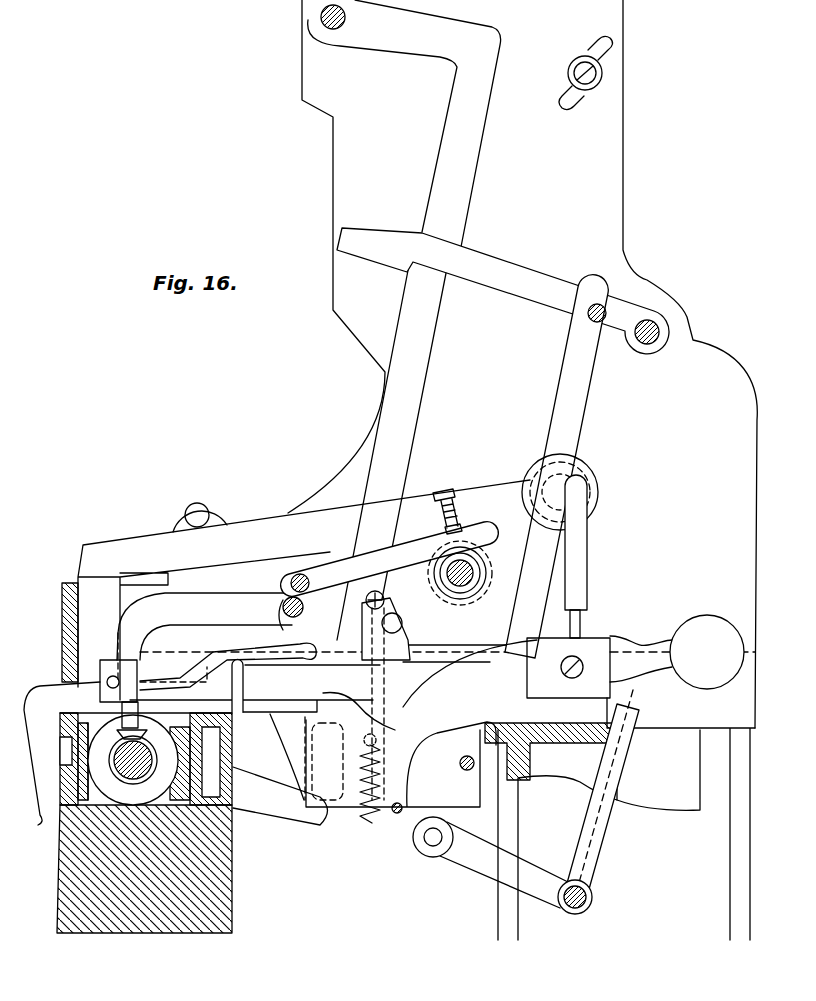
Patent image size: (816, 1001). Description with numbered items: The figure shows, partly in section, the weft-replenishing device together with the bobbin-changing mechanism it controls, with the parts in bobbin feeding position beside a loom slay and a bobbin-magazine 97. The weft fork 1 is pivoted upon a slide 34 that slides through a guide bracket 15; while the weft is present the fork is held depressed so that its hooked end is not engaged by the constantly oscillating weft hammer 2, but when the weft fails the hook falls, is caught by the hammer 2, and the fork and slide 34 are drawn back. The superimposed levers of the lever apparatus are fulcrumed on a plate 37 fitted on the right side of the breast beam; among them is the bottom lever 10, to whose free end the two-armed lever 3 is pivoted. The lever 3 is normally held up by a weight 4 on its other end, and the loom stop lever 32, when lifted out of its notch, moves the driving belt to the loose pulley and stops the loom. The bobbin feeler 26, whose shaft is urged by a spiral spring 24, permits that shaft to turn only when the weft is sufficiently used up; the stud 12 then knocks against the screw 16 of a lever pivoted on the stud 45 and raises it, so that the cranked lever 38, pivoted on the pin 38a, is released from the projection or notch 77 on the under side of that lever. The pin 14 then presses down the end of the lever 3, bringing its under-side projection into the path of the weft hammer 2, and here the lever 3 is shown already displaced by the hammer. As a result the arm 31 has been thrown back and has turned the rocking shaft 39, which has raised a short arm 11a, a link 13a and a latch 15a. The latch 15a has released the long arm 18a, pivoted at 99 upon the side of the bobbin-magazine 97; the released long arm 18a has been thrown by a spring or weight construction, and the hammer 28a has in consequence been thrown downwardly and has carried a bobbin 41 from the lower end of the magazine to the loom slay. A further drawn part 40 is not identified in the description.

The bobbin-magazine 97 is at (443, 470).
The pivot 99 is at (322, 22).
The long arm 18a is at (373, 320).
The latch 15a is at (380, 243).
The link 13a is at (578, 412).
The hammer 28a is at (99, 578).
The stud 45 is at (303, 576).
The projection or notch 77 is at (404, 545).
The screw 16 is at (453, 520).
The bobbin feeler 26 is at (195, 613).
The spiral spring 24 is at (170, 672).
The guide bracket 15 is at (244, 684).
The pin 14 is at (387, 630).
The lever 3 is at (400, 656).
The stud 12 is at (460, 588).
The loom stop lever 32 is at (582, 573).
The weight 4 is at (707, 628).
The bottom lever 10 is at (640, 683).
The slide 34 is at (217, 698).
The bobbin 41 is at (144, 817).
The weft fork 1 is at (62, 763).
The weft hammer 2 is at (393, 797).
The cranked lever 38 is at (408, 810).
The pin 38a is at (467, 772).
The short arm 11a is at (488, 878).
The plate 40 is at (563, 763).
The arm 31 is at (637, 717).
The plate 37 is at (676, 730).
The rocking shaft 39 is at (575, 908).